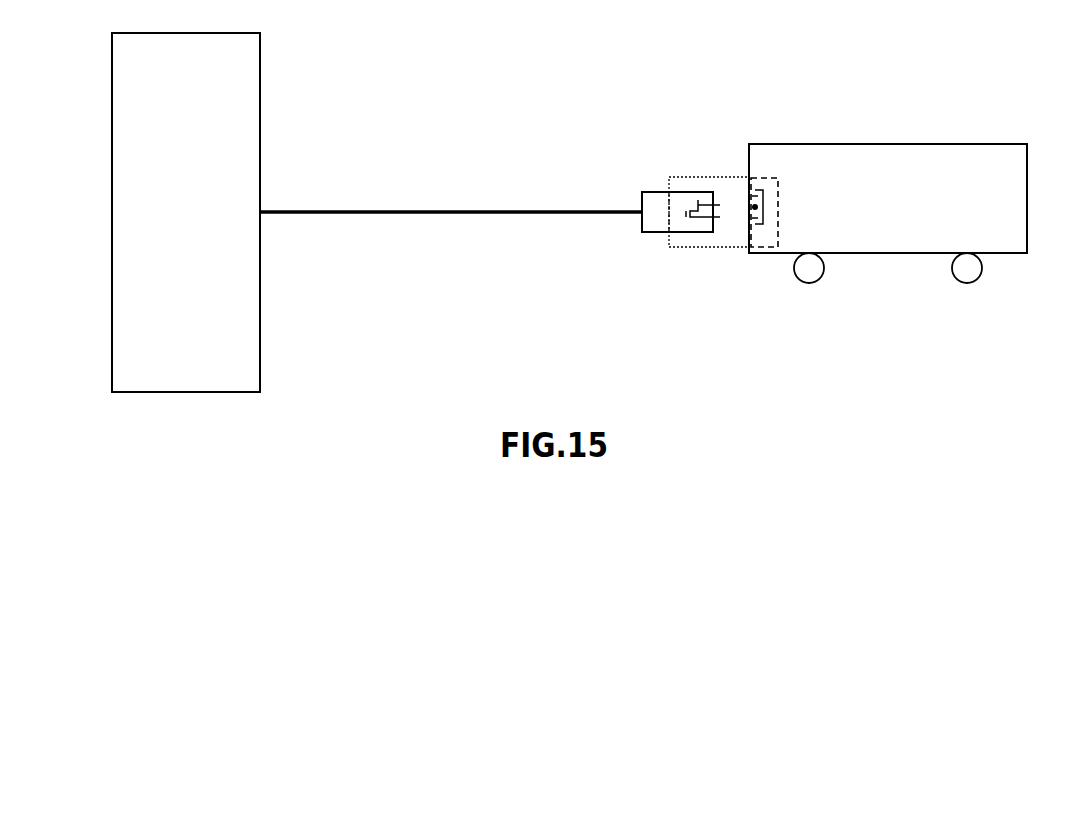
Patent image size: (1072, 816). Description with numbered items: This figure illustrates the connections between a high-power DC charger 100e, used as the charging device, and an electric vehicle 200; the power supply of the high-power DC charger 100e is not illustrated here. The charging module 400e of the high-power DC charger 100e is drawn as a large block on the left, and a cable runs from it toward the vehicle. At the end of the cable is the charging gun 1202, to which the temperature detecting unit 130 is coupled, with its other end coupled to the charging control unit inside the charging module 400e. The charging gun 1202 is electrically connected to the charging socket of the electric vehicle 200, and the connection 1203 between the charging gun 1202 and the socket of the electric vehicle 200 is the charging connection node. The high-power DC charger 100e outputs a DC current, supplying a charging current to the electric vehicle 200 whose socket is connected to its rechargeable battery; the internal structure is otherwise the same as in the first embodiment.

The high-power DC charger 100e is at (450, 92).
The charging module 400e is at (186, 212).
The temperature detecting unit 130 is at (664, 197).
The charging gun 1202 is at (677, 232).
The connection 1203 is at (710, 178).
The electric vehicle 200 is at (888, 213).